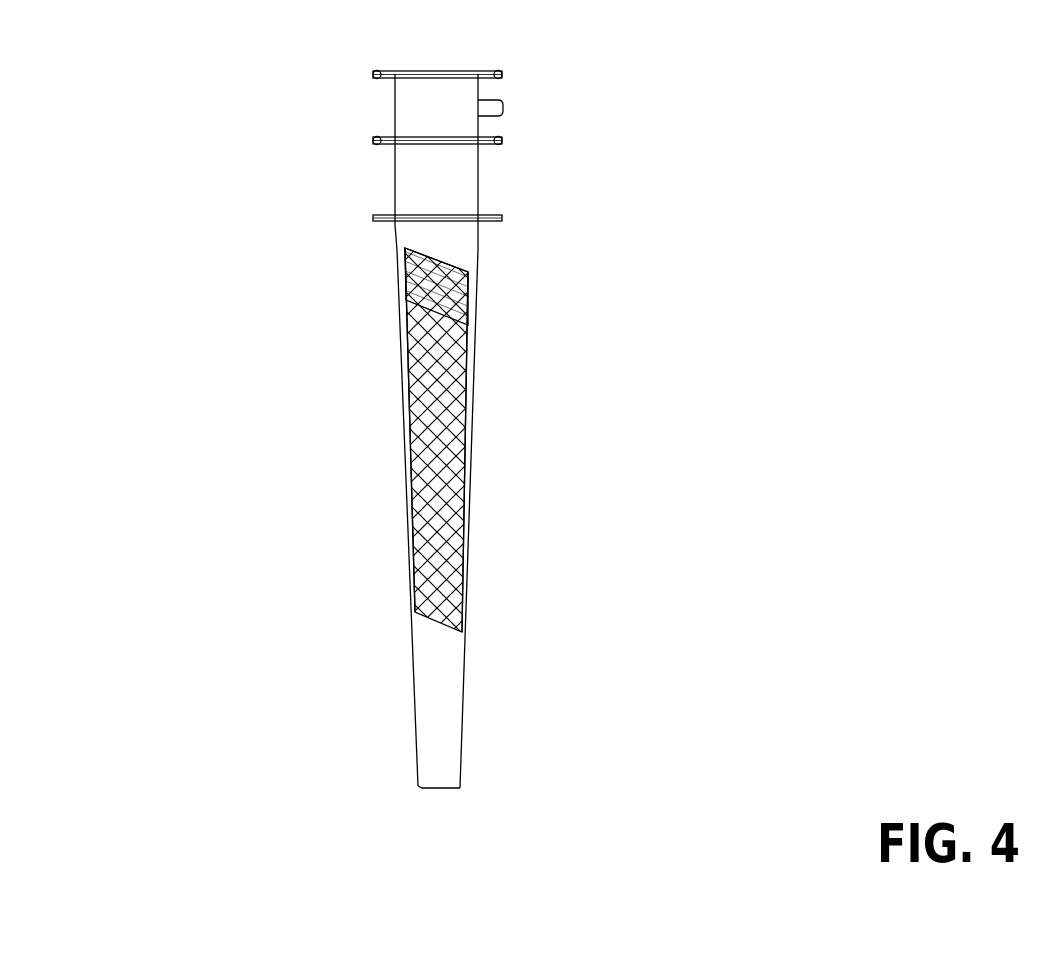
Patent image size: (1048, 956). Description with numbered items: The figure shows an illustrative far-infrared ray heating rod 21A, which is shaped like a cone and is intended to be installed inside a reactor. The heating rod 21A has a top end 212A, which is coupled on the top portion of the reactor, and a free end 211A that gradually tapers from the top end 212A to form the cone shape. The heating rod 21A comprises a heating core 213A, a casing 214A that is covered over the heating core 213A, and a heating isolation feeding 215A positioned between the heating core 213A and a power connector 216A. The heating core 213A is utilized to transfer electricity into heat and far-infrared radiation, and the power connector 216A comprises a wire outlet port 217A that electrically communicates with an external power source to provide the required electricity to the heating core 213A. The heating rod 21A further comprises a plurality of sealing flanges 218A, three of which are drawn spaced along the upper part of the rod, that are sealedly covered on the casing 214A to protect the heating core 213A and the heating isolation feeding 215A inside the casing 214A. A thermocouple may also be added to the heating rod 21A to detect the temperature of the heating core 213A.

The far-infrared ray heating rod 21A is at (130, 97).
The free end 211A is at (432, 783).
The top end 212A is at (413, 188).
The heating core 213A is at (505, 440).
The casing 214A is at (380, 518).
The heating isolation feeding 215A is at (505, 295).
The power connector 216A is at (565, 162).
The wire outlet port 217A is at (575, 131).
The sealing flange 218A is at (373, 75).